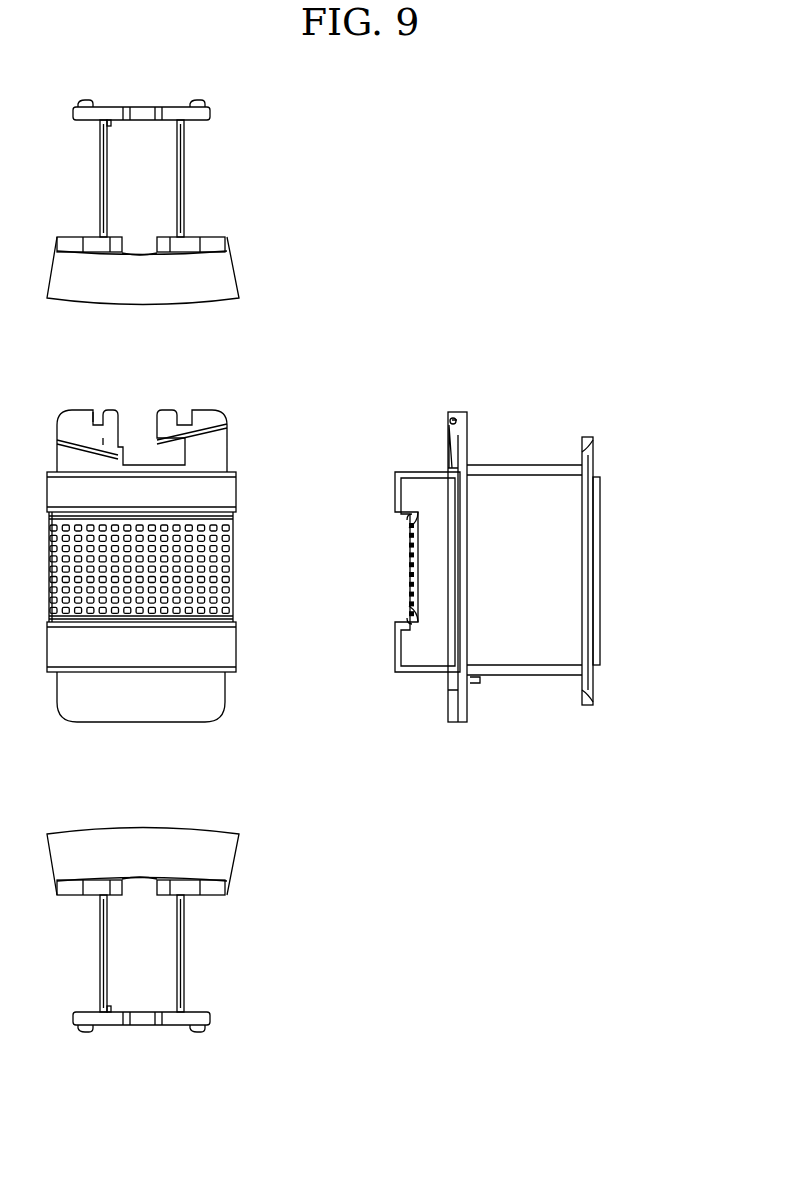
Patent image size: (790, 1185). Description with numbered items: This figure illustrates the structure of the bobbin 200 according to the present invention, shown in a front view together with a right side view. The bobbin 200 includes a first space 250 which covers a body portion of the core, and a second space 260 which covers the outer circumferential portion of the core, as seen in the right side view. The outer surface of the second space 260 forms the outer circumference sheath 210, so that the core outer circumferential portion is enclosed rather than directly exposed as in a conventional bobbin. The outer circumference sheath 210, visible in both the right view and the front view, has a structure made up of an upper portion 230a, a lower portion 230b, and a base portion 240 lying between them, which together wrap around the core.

The bobbin 200 is at (430, 181).
The outer circumference sheath 210 is at (213, 281).
The upper portion 230a is at (180, 304).
The lower portion 230b is at (395, 643).
The base portion 240 is at (400, 562).
The first space 250 is at (542, 595).
The second space 260 is at (445, 655).